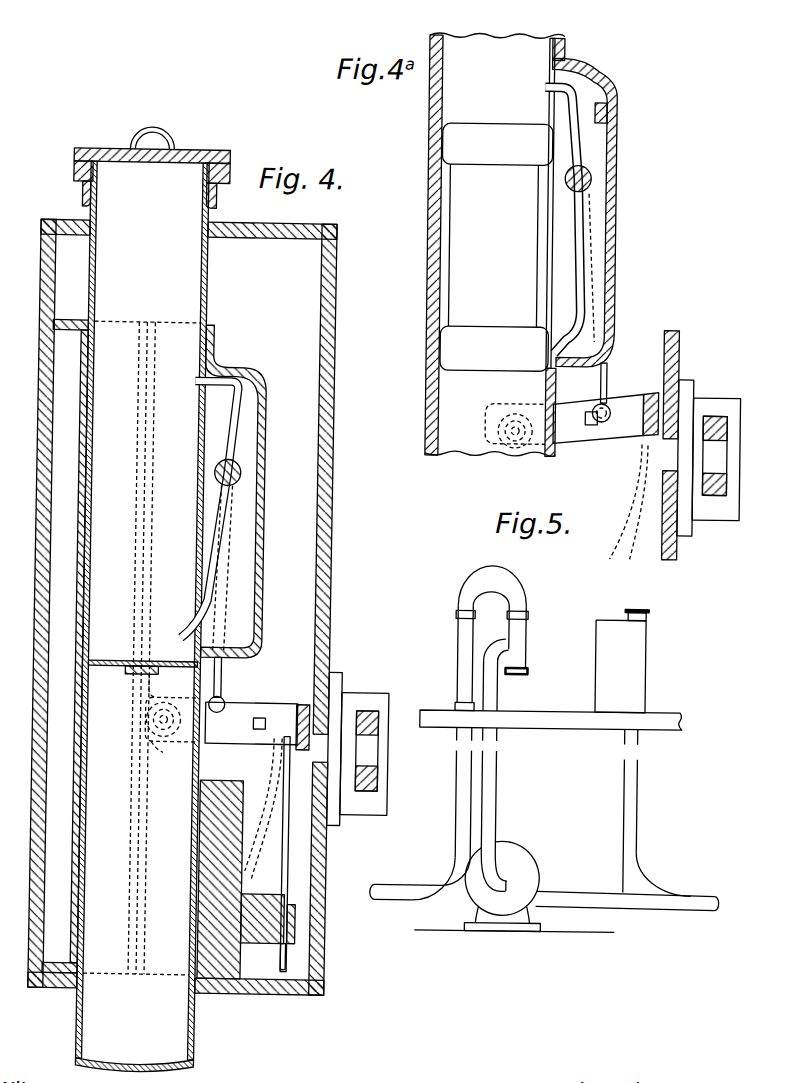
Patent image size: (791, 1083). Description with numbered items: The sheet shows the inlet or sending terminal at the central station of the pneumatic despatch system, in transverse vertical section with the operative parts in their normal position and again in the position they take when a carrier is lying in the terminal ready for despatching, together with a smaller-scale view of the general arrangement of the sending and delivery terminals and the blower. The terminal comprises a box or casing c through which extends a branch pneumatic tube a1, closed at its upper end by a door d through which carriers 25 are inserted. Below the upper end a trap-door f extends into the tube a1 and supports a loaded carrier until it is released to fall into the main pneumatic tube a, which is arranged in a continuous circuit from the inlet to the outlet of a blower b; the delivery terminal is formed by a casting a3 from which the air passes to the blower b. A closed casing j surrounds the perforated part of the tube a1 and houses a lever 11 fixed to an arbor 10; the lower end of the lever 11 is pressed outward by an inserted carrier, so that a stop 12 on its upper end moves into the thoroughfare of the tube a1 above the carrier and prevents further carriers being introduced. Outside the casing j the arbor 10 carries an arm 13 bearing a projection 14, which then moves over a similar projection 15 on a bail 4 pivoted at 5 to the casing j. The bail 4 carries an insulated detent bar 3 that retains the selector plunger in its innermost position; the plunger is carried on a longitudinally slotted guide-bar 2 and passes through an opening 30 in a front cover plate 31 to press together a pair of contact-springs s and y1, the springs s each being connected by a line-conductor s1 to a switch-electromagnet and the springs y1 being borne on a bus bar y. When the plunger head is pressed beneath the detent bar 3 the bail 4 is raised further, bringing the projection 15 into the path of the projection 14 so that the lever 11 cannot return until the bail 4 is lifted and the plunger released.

In FIG. 4, the door d is at (119, 150).
In FIG. 4, the branch pneumatic tube a1 is at (124, 616).
In FIG. 5, the branch pneumatic tube a1 is at (627, 610).
In FIG. 4, the closed casing j is at (261, 533).
In FIG. 4A, the closed casing j is at (583, 212).
In FIG. 4, the stop 12 is at (233, 392).
In FIG. 4A, the stop 12 is at (548, 84).
In FIG. 4, the lever 11 is at (225, 582).
In FIG. 4A, the lever 11 is at (579, 308).
In FIG. 4, the arbor 10 is at (244, 470).
In FIG. 4A, the arbor 10 is at (592, 175).
In FIG. 4, the arm 13 is at (226, 672).
In FIG. 4A, the arm 13 is at (609, 371).
In FIG. 4, the projection 14 is at (233, 703).
In FIG. 4A, the projection 14 is at (598, 404).
In FIG. 4, the trap-door f is at (104, 668).
In FIG. 4, the pivot 5 is at (156, 722).
In FIG. 4A, the pivot 5 is at (510, 418).
In FIG. 4, the bail 4 is at (243, 756).
In FIG. 4A, the bail 4 is at (631, 433).
In FIG. 4, the projection 15 is at (273, 716).
In FIG. 4A, the projection 15 is at (597, 425).
In FIG. 4, the detent bar 3 is at (308, 752).
In FIG. 4A, the detent bar 3 is at (661, 396).
In FIG. 4, the opening 30 is at (338, 740).
In FIG. 4A, the opening 30 is at (709, 458).
In FIG. 4, the front cover plate 31 is at (328, 822).
In FIG. 4, the guide-bar 2 is at (374, 781).
In FIG. 4, the contact-springs s is at (300, 862).
In FIG. 4, the line-conductor s1 is at (298, 953).
In FIG. 4, the bus bar y is at (252, 900).
In FIG. 4, the contact-springs y1 is at (289, 808).
In FIG. 4A, the contact-springs y1 is at (629, 501).
In FIG. 4A, the carriers 25 is at (466, 128).
In FIG. 5, the pneumatic tube a is at (497, 777).
In FIG. 5, the casting a3 is at (525, 645).
In FIG. 5, the blower b is at (537, 866).
In FIG. 5, the box or casing c is at (597, 694).